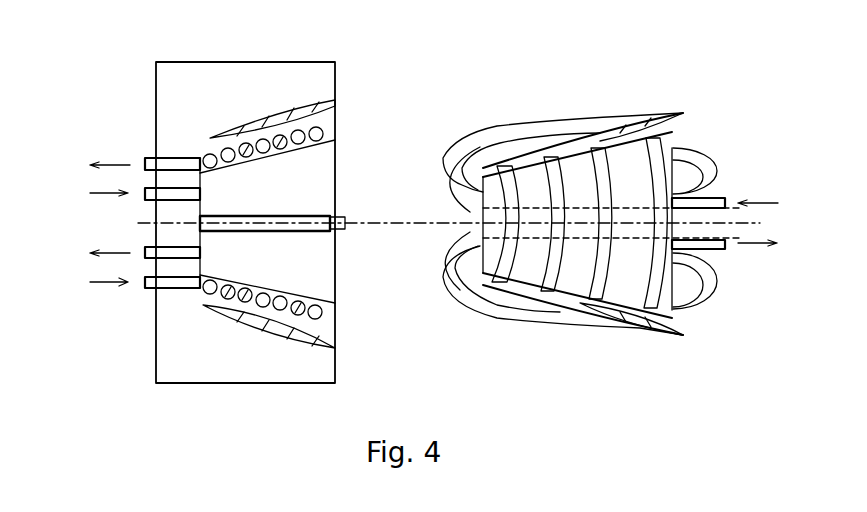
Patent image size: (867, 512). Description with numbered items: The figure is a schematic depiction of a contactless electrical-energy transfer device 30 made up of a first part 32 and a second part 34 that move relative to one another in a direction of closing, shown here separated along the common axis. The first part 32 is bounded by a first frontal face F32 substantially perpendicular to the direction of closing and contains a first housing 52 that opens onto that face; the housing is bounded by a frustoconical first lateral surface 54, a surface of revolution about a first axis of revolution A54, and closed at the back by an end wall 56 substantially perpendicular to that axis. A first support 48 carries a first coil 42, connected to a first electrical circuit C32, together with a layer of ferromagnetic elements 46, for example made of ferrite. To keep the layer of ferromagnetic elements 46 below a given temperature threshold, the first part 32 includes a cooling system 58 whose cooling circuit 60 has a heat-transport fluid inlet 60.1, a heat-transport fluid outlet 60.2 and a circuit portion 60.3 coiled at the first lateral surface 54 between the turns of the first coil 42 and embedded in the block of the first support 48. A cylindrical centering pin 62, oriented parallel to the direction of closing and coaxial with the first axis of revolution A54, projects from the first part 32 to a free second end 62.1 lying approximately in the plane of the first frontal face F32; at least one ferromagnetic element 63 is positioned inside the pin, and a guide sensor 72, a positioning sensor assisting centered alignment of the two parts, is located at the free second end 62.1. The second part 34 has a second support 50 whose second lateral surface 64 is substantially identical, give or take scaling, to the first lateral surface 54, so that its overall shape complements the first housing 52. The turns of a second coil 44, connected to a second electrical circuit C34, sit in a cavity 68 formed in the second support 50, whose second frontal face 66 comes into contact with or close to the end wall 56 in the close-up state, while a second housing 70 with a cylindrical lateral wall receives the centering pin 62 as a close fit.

The electrical-energy transfer device 30 is at (470, 108).
The first part 32 is at (207, 87).
The second part 34 is at (672, 150).
The first coil 42 is at (243, 141).
The second coil 44 is at (605, 155).
The layer of ferromagnetic elements 46 is at (277, 108).
The first support 48 is at (178, 368).
The second support 50 is at (628, 278).
The first housing 52 is at (280, 185).
The first lateral surface 54 is at (228, 178).
The end wall 56 is at (200, 266).
The cooling system 58 is at (258, 320).
The cooling circuit 60 is at (208, 137).
The heat-transport fluid inlet 60.1 is at (172, 190).
The heat-transport fluid outlet 60.2 is at (168, 258).
The circuit portion 60.3 is at (230, 298).
The centering pin 62 is at (328, 226).
The free second end 62.1 is at (292, 235).
The ferromagnetic element 63 is at (310, 232).
The second lateral surface 64 is at (566, 140).
The second frontal face 66 is at (472, 210).
The cavity 68 is at (683, 328).
The second housing 70 is at (586, 236).
The guide sensor 72 is at (343, 218).
The first axis of revolution A54 is at (142, 223).
The first electrical circuit C32 is at (110, 165).
The second electrical circuit C34 is at (753, 243).
The first frontal face F32 is at (336, 90).